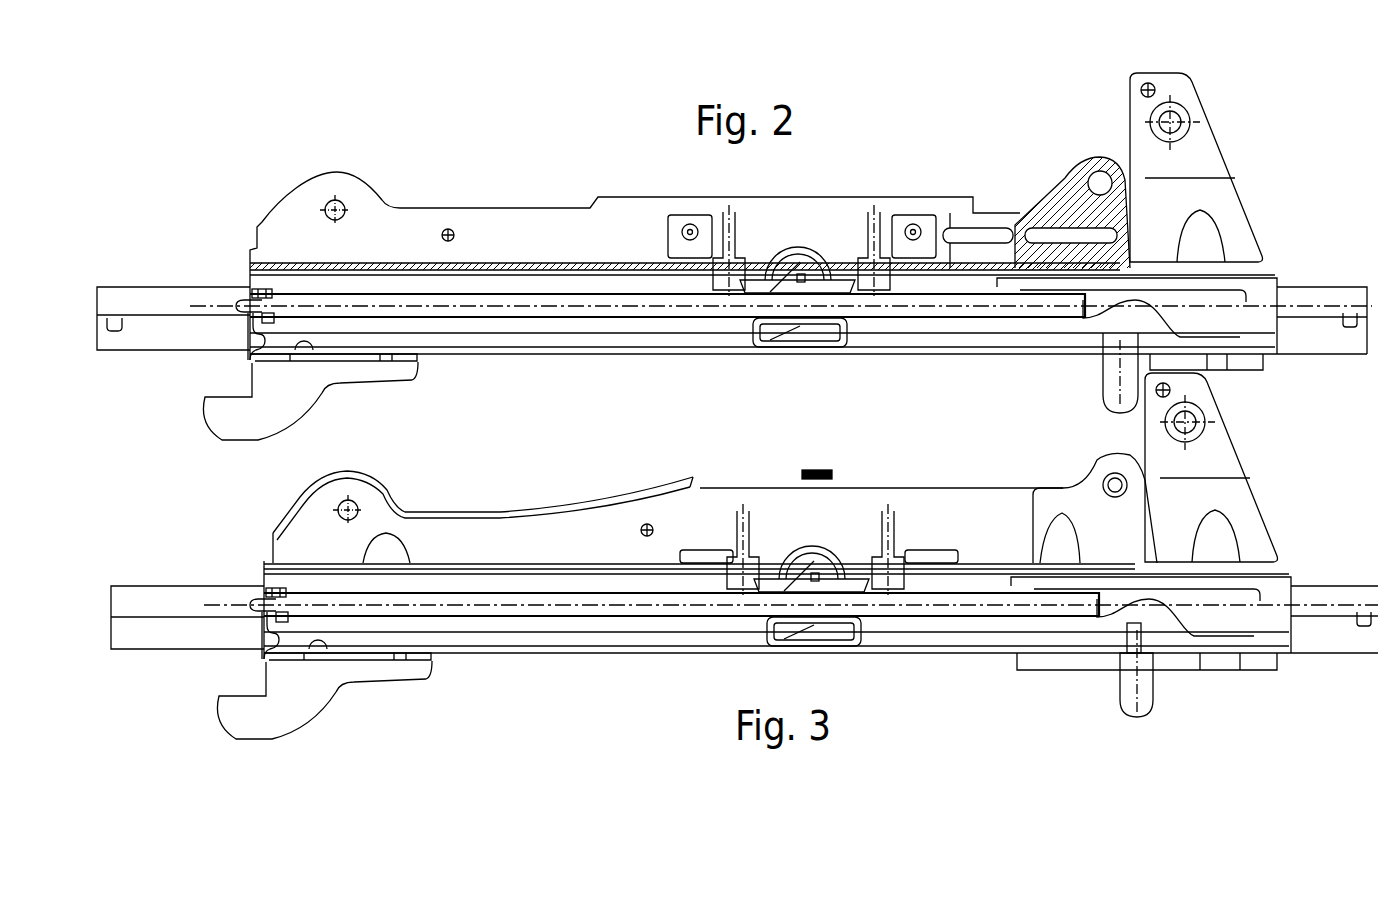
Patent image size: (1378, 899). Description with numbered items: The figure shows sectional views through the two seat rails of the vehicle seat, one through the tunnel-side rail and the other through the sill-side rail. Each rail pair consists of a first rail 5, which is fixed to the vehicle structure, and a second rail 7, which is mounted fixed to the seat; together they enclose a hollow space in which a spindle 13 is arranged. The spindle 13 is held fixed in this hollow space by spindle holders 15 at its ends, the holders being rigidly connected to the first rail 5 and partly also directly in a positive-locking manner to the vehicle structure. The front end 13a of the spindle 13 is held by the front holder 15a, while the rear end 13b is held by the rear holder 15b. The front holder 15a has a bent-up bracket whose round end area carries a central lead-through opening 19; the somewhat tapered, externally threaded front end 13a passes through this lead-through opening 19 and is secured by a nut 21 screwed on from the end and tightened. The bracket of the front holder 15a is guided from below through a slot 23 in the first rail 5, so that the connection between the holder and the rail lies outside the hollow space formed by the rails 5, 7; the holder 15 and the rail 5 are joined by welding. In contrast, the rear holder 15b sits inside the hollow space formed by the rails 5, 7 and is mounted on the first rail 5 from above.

In FIG. 2, the first rail 5 is at (150, 293).
In FIG. 3, the first rail 5 is at (187, 581).
In FIG. 2, the second rail 7 is at (393, 273).
In FIG. 3, the second rail 7 is at (455, 572).
In FIG. 2, the spindle 13 is at (460, 303).
In FIG. 3, the spindle 13 is at (791, 663).
In FIG. 2, the front end of the spindle 13a is at (242, 303).
In FIG. 3, the front end of the spindle 13a is at (230, 538).
In FIG. 2, the rear end of the spindle 13b is at (1070, 305).
In FIG. 3, the rear end of the spindle 13b is at (1222, 569).
In FIG. 2, the spindle holder 15 is at (247, 353).
In FIG. 3, the spindle holder 15 is at (214, 655).
In FIG. 2, the front holder 15a is at (343, 355).
In FIG. 3, the front holder 15a is at (347, 693).
In FIG. 2, the rear holder 15b is at (1085, 323).
In FIG. 3, the rear holder 15b is at (1095, 627).
In FIG. 2, the lead-through opening 19 is at (272, 307).
In FIG. 2, the nut 21 is at (262, 292).
In FIG. 2, the slot 23 is at (265, 361).